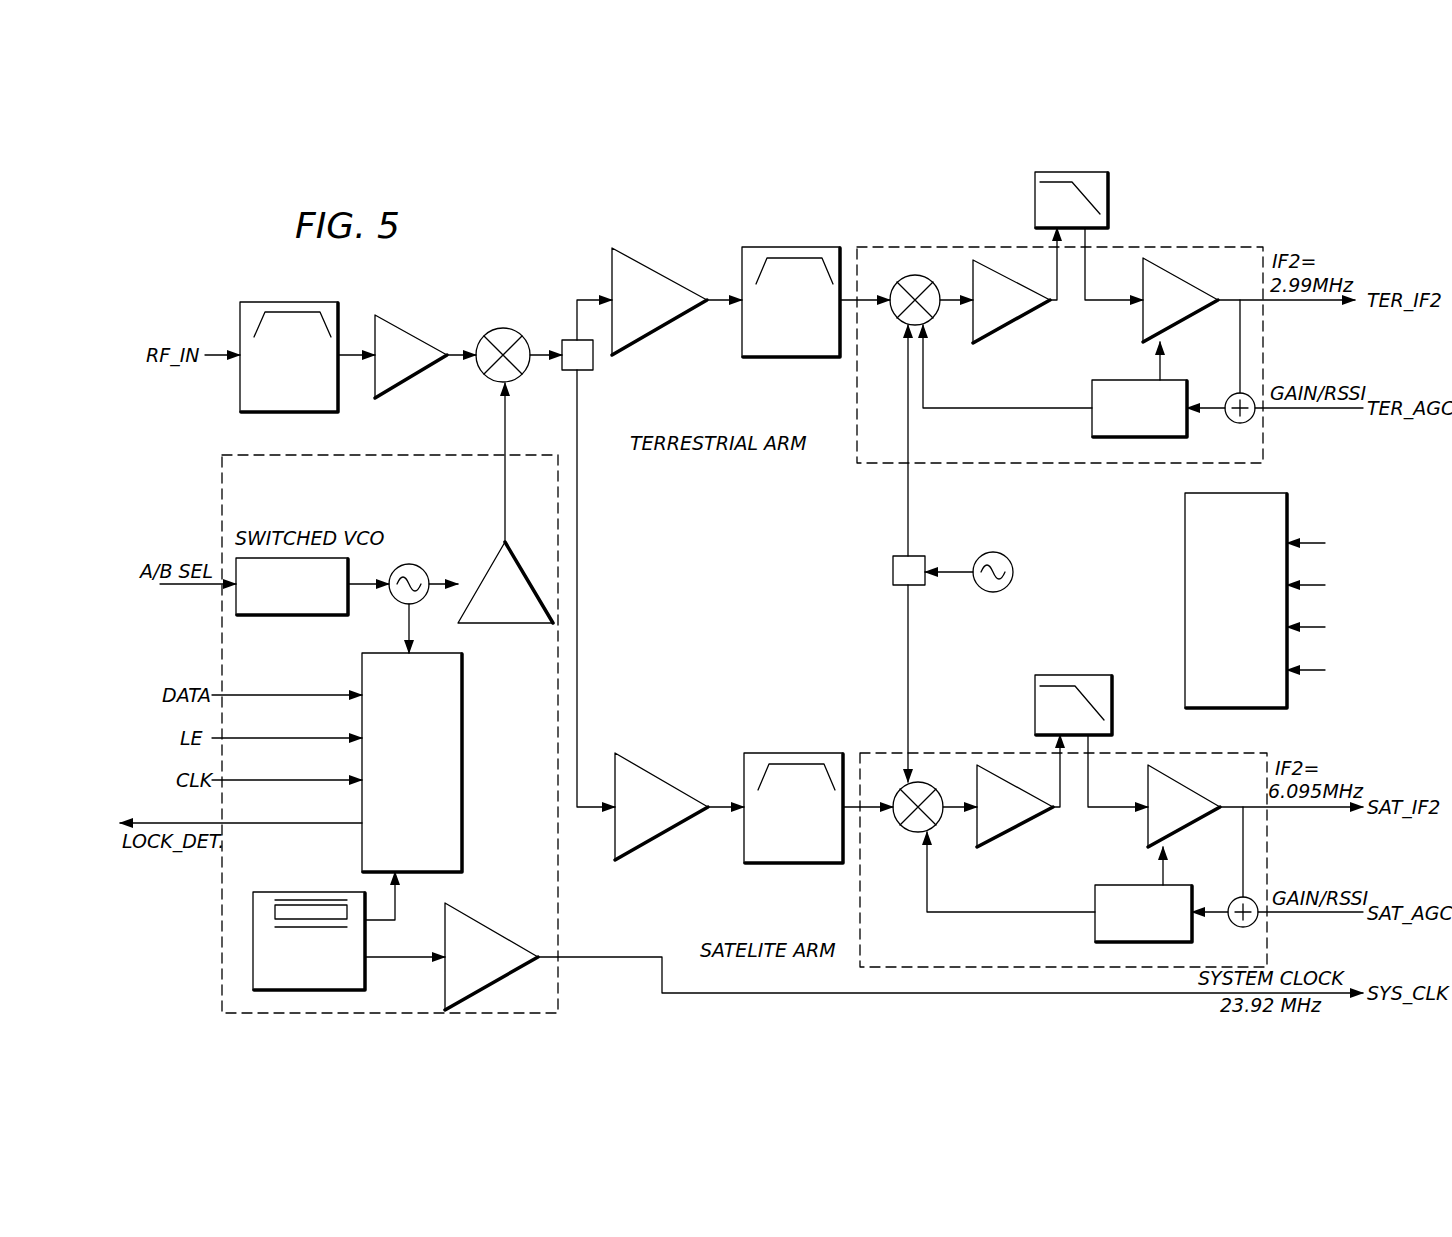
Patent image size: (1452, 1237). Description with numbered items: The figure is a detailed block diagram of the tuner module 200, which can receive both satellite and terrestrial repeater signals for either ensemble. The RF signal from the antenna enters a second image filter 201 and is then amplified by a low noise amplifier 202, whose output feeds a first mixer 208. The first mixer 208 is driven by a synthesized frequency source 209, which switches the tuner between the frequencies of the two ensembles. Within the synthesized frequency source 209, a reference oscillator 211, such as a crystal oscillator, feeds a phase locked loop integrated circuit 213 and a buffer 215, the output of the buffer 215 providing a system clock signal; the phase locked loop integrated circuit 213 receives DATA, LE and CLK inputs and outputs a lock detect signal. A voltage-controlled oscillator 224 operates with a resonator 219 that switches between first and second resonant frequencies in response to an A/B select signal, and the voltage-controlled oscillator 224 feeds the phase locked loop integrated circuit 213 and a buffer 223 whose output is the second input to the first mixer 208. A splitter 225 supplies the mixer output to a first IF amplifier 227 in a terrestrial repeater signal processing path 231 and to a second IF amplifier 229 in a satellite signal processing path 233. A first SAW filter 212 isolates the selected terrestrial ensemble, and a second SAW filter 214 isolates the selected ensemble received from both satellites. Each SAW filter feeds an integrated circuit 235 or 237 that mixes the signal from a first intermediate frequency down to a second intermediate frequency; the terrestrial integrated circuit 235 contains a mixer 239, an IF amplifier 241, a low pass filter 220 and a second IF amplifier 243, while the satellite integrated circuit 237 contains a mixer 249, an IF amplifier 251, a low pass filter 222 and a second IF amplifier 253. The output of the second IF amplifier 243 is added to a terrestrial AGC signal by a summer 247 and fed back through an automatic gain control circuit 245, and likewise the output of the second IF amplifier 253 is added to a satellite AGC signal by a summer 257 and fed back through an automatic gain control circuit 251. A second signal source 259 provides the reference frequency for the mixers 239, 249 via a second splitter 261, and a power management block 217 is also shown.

The tuner module 200 is at (1352, 252).
The second image filter 201 is at (285, 300).
The low noise amplifier 202 is at (408, 333).
The first mixer 208 is at (484, 376).
The synthesized frequency source 209 is at (222, 500).
The reference oscillator 211 is at (253, 944).
The first SAW filter 212 is at (790, 358).
The phase locked loop integrated circuit 213 is at (462, 765).
The second SAW filter 214 is at (794, 864).
The buffer 215 is at (493, 930).
The power management block 217 is at (1287, 518).
The resonator 219 is at (310, 616).
The low pass filter 220 is at (1108, 205).
The low pass filter 222 is at (1112, 702).
The buffer 223 is at (506, 628).
The voltage-controlled oscillator 224 is at (415, 563).
The splitter 225 is at (593, 358).
The first IF amplifier 227 is at (612, 280).
The second IF amplifier 229 is at (660, 848).
The terrestrial repeater signal processing path 231 is at (830, 447).
The satellite signal processing path 233 is at (890, 672).
The integrated circuit 235 is at (920, 247).
The integrated circuit 237 is at (926, 752).
The mixer 239 is at (906, 278).
The IF amplifier 241 is at (1012, 276).
The second IF amplifier 243 is at (1172, 280).
The automatic gain control circuit 245 is at (1120, 438).
The summer 247 is at (1243, 423).
The mixer 249 is at (906, 784).
The IF amplifier / automatic gain control circuit 251 is at (1014, 782).
The second IF amplifier 253 is at (1176, 786).
The summer 257 is at (1246, 927).
The second signal source 259 is at (1008, 589).
The second splitter 261 is at (893, 572).